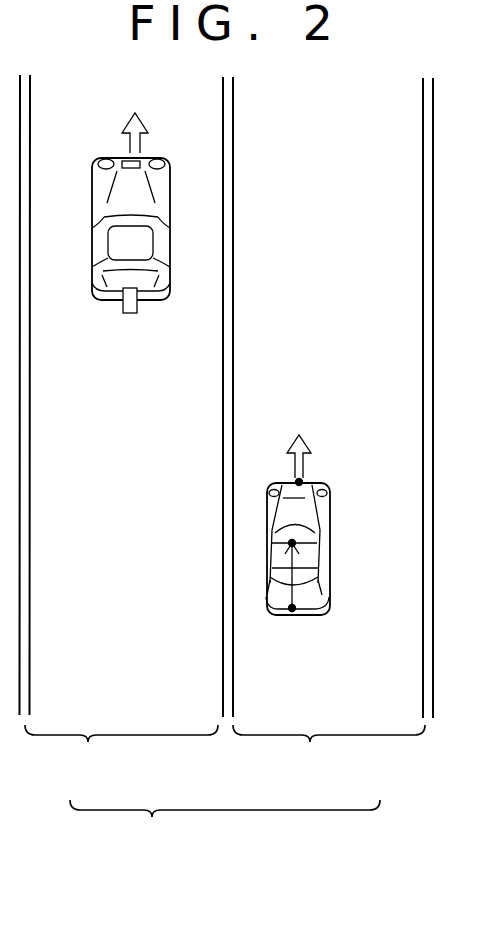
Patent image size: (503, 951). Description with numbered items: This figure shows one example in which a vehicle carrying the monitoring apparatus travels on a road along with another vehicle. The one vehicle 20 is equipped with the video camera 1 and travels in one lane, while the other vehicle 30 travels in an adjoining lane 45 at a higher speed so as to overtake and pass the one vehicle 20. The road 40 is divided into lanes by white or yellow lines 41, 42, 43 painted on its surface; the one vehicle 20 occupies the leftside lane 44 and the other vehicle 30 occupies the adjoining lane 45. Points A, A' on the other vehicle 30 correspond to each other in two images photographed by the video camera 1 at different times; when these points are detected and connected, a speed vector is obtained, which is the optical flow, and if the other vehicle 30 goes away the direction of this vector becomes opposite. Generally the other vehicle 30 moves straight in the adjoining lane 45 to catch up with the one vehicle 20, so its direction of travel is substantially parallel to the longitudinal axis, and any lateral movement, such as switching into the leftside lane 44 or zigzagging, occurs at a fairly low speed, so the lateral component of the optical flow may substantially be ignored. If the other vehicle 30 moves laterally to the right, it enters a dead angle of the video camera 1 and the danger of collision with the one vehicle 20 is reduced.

The video camera 1 is at (122, 302).
The one vehicle 20 is at (92, 188).
The other vehicle 30 is at (323, 580).
The road 40 is at (151, 820).
The white or yellow line 41 is at (28, 678).
The white or yellow line 42 is at (232, 682).
The white or yellow line 43 is at (430, 686).
The leftside lane 44 is at (88, 742).
The adjoining lane 45 is at (310, 742).
The point on the other vehicle A is at (284, 639).
The corresponding point on the other vehicle A' is at (268, 568).